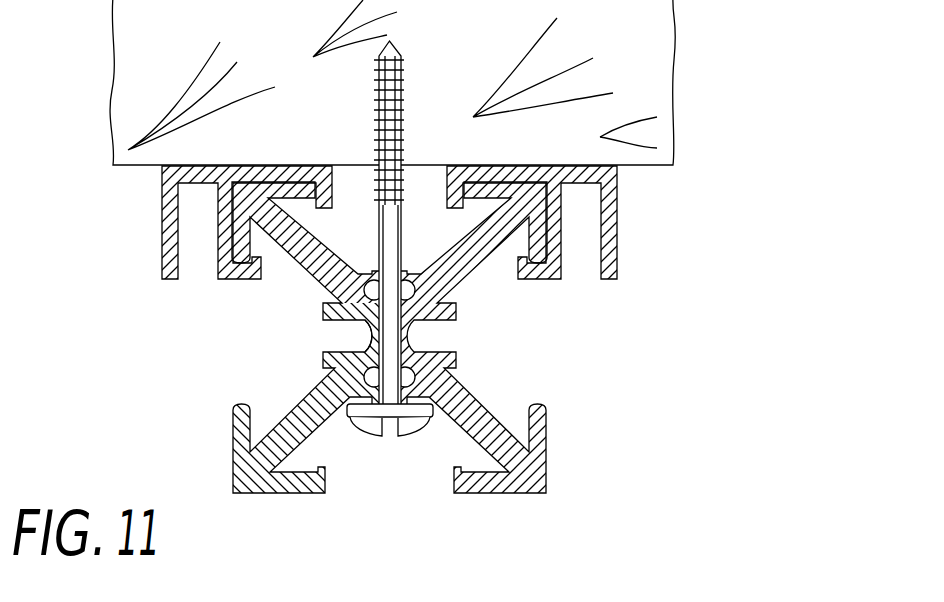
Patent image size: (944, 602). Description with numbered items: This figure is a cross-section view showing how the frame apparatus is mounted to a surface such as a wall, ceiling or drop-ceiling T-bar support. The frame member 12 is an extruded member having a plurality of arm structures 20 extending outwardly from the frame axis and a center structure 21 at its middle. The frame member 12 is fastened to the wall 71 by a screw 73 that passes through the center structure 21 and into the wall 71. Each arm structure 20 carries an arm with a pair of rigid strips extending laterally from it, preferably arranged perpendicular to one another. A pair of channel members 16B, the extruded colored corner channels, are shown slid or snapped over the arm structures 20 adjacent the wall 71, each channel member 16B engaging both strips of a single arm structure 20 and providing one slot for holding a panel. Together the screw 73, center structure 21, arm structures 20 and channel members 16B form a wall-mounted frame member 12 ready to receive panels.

The wall 71 is at (652, 90).
The channel member 16B is at (163, 242).
The frame member 12 is at (570, 357).
The center structure 21 is at (368, 333).
The arm structure 20 is at (547, 452).
The screw 73 is at (397, 437).